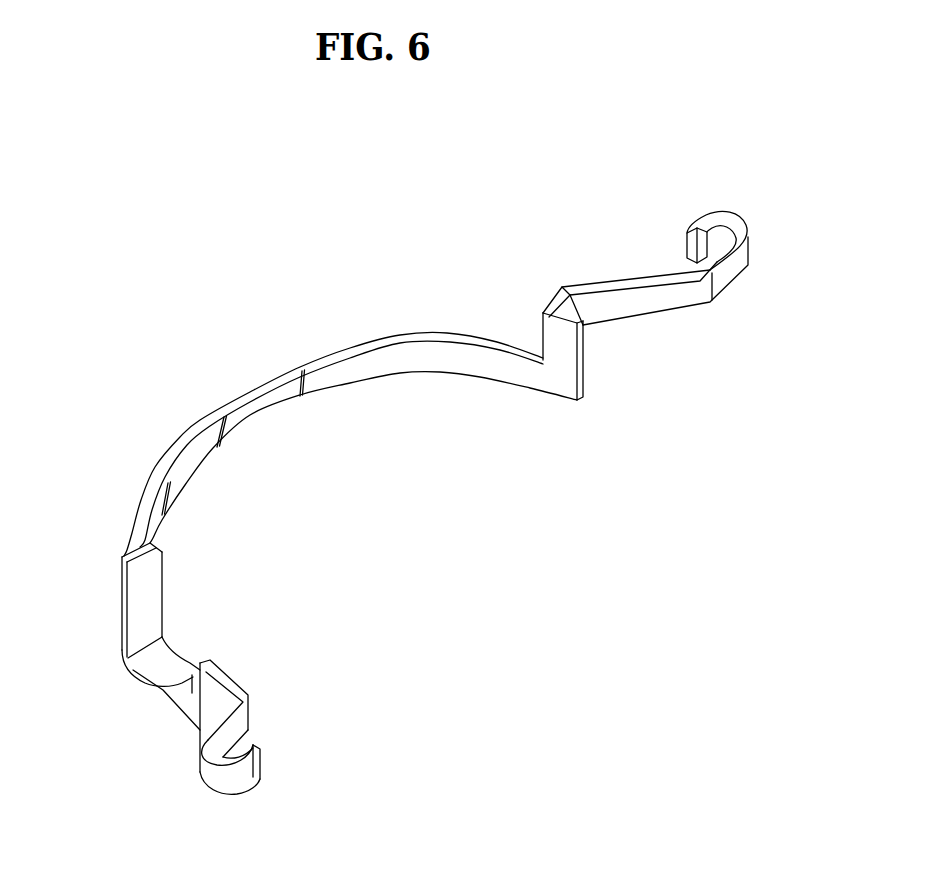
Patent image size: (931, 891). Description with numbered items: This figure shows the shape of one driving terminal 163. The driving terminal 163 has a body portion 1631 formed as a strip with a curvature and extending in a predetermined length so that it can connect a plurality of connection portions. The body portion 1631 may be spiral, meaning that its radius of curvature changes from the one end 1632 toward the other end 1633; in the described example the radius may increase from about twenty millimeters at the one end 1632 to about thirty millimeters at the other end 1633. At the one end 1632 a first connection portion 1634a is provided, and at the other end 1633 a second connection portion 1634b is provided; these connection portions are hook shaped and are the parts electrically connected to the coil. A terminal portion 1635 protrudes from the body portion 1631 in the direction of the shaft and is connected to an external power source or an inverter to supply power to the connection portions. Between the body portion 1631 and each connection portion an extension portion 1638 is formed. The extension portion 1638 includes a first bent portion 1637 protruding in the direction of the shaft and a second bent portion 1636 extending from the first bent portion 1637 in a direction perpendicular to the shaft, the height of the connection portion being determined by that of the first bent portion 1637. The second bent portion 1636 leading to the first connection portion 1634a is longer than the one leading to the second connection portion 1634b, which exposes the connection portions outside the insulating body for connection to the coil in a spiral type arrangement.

The driving terminal 163 is at (362, 296).
The body portion 1631 is at (258, 380).
The one end 1632 is at (563, 378).
The other end 1633 is at (190, 710).
The first connection portion 1634a is at (727, 212).
The second connection portion 1634b is at (215, 773).
The terminal portion 1635 is at (142, 596).
The second bent portion 1636 is at (677, 298).
The first bent portion 1637 is at (563, 352).
The extension portion 1638 is at (722, 322).